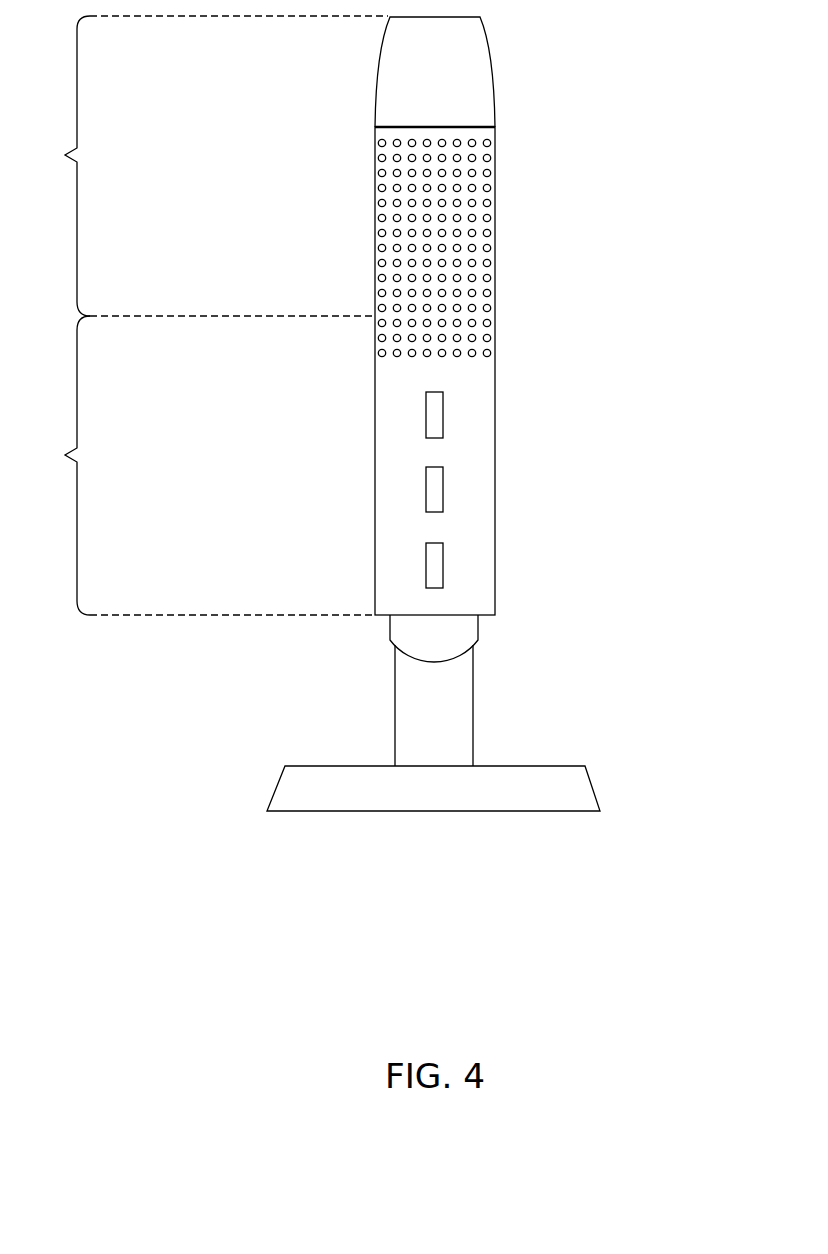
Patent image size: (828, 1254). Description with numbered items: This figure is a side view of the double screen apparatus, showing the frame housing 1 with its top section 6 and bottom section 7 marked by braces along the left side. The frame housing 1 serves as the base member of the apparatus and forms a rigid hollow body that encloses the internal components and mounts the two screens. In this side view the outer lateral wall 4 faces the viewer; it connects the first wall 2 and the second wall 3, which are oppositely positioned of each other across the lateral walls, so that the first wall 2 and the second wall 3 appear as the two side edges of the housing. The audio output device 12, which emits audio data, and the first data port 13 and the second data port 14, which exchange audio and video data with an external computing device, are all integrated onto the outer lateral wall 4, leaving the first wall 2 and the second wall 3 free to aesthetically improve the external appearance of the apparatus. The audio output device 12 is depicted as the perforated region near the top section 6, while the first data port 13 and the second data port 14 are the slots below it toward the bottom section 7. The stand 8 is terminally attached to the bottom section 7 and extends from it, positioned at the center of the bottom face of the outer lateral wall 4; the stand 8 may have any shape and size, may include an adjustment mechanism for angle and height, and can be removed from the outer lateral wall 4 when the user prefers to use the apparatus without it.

The frame housing 1 is at (634, 337).
The first wall 2 is at (375, 164).
The second wall 3 is at (475, 247).
The outer lateral wall 4 is at (444, 77).
The top section 6 is at (311, 186).
The bottom section 7 is at (273, 465).
The stand 8 is at (588, 795).
The audio output device 12 is at (490, 294).
The first data port 13 is at (443, 408).
The second data port 14 is at (443, 485).